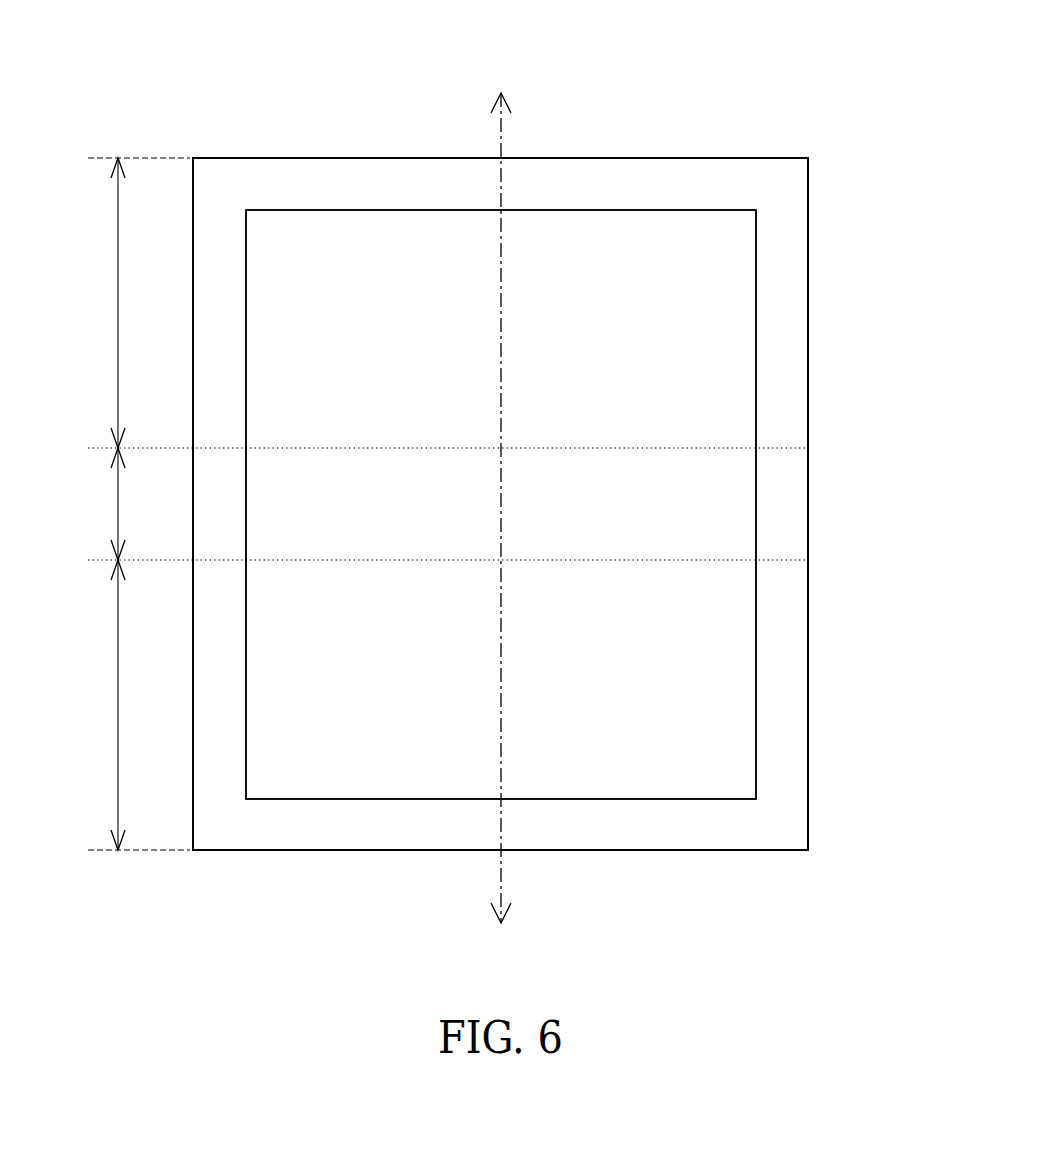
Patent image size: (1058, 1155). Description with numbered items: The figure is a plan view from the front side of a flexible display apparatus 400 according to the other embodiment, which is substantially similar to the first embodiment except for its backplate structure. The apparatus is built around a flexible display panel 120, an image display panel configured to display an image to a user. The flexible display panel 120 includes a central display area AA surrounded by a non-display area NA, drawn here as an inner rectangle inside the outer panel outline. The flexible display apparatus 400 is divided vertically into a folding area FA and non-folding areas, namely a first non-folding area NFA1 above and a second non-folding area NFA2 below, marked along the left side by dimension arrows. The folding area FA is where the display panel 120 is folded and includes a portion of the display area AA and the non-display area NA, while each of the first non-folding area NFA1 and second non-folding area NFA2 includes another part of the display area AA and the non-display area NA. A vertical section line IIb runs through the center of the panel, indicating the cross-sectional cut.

The flexible display apparatus 400 is at (808, 36).
The flexible display panel 120 is at (758, 158).
The non-display area NA is at (779, 236).
The display area AA is at (737, 290).
The section line IIb-IIb' IIb is at (503, 510).
The first non-folding area NFA1 is at (92, 303).
The folding area FA is at (102, 504).
The second non-folding area NFA2 is at (92, 705).